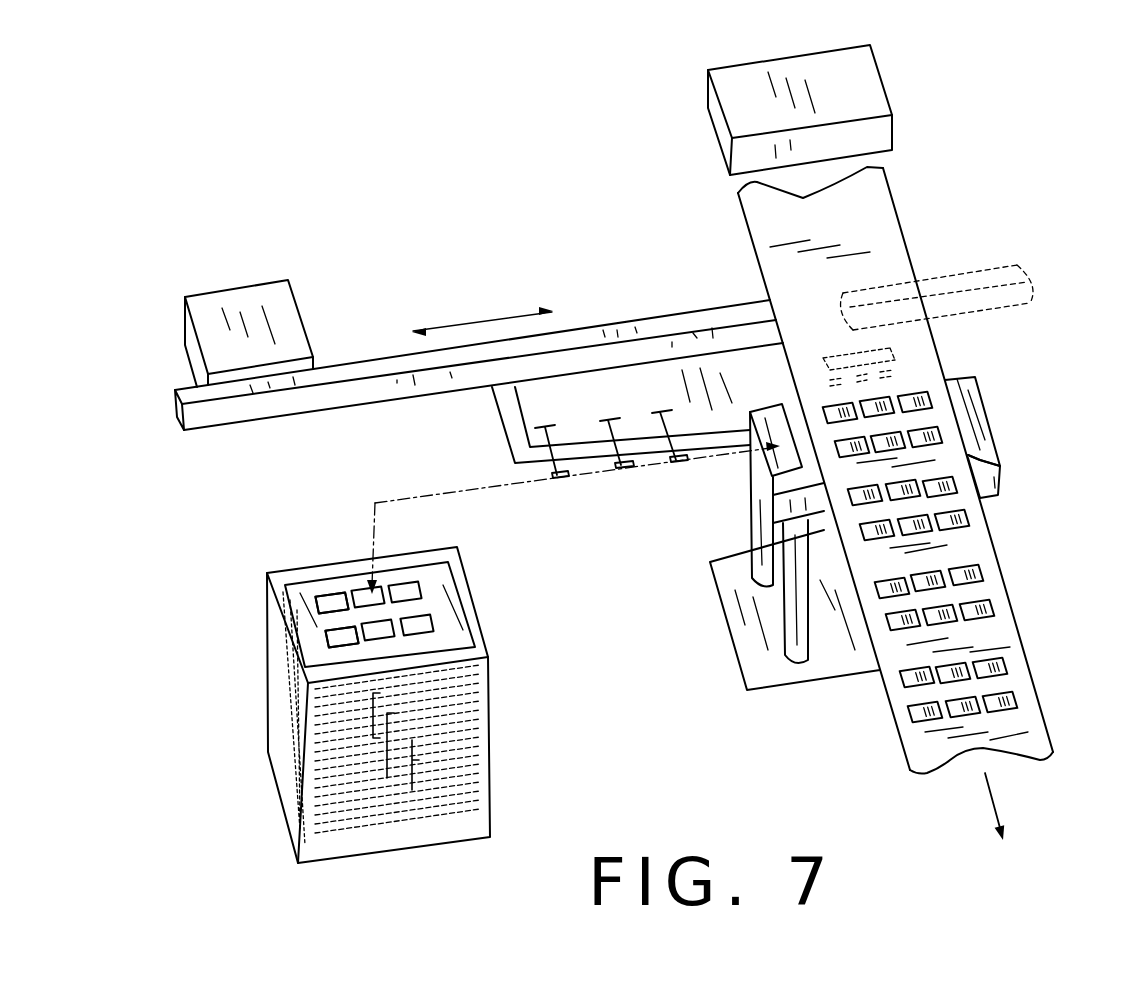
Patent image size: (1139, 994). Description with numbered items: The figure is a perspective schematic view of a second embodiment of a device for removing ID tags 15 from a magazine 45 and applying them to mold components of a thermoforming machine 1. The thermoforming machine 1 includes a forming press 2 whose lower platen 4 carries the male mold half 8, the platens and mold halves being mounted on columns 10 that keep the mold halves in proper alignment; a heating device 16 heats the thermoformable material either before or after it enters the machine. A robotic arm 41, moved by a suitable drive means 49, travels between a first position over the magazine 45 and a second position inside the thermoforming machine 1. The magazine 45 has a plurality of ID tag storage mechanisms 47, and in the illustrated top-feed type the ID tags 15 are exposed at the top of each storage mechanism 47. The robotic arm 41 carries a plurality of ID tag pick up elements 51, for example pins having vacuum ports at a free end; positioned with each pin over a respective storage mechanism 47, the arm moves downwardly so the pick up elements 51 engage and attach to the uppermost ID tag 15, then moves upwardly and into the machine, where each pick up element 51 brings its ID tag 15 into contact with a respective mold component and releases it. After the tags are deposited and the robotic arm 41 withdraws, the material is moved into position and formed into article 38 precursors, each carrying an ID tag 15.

The thermoforming machine 1 is at (517, 176).
The forming press 2 is at (1010, 477).
The lower platen 4 is at (993, 452).
The male mold half 8 is at (967, 417).
The columns 10 is at (780, 613).
The ID tags 15 is at (407, 590).
The heating device 16 is at (883, 77).
The article 38 is at (925, 392).
The robotic arm 41 is at (345, 363).
The magazine 45 is at (265, 703).
The ID tag storage mechanisms 47 is at (325, 637).
The drive means 49 is at (212, 296).
The ID tag pick up elements 51 is at (830, 383).